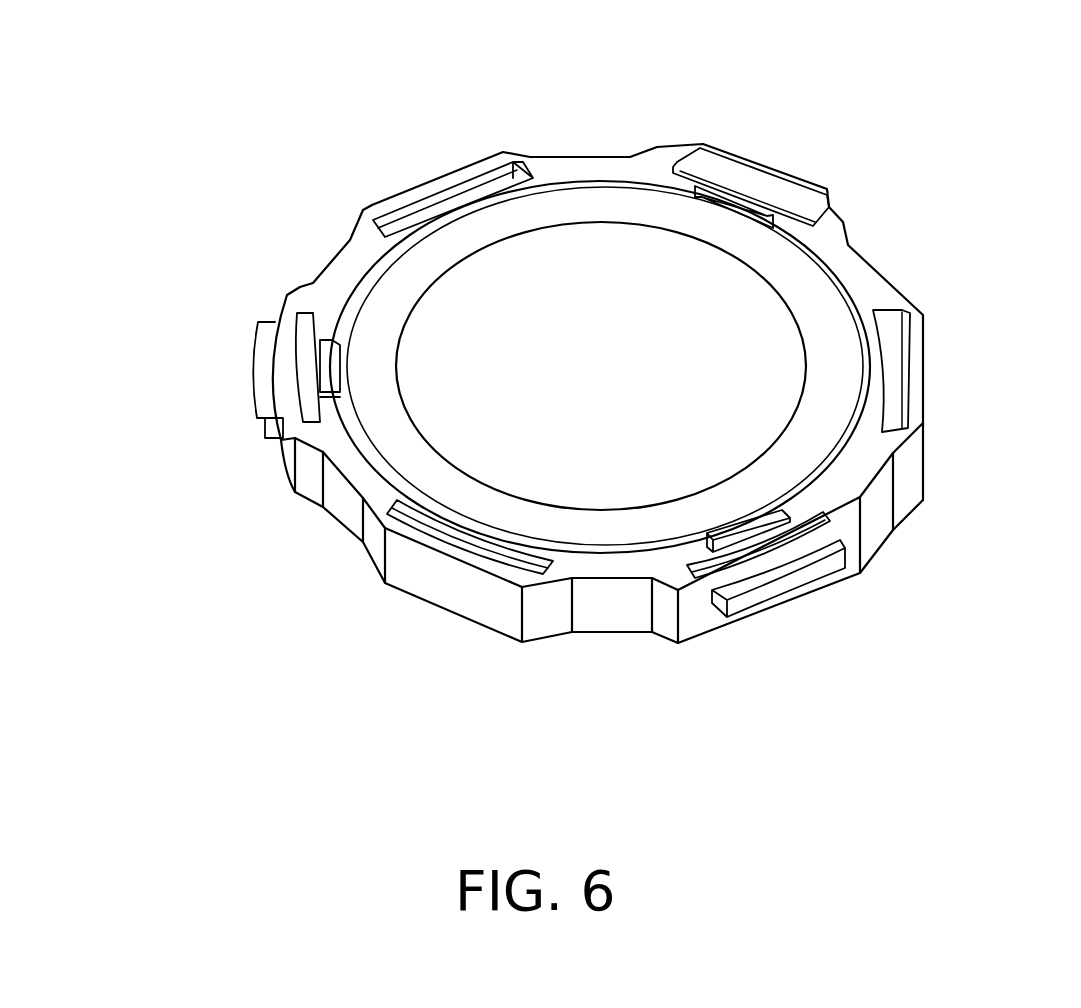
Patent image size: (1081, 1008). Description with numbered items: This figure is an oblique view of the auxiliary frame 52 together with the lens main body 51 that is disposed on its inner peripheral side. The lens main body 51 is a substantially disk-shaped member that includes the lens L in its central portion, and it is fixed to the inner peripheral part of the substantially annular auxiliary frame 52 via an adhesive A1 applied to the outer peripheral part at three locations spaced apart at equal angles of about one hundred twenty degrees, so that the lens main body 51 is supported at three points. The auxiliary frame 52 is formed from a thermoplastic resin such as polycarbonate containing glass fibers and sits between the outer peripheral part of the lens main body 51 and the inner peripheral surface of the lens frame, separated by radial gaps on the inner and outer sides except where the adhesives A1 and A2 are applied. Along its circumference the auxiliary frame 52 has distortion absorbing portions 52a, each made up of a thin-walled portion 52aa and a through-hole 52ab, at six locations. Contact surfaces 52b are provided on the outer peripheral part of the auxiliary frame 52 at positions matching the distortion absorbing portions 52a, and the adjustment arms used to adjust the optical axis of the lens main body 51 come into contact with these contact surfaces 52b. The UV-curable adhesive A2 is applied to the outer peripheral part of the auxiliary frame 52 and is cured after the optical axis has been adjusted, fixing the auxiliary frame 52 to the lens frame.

The lens main body 51 is at (405, 286).
The auxiliary frame 52 is at (602, 375).
The distortion absorbing portion 52a is at (490, 150).
The contact surface 52b is at (458, 167).
The thin-walled portion 52aa is at (412, 197).
The through-hole 52ab is at (405, 218).
The adhesive A1 is at (807, 190).
The adhesive A2 is at (812, 193).
The lens L is at (705, 330).